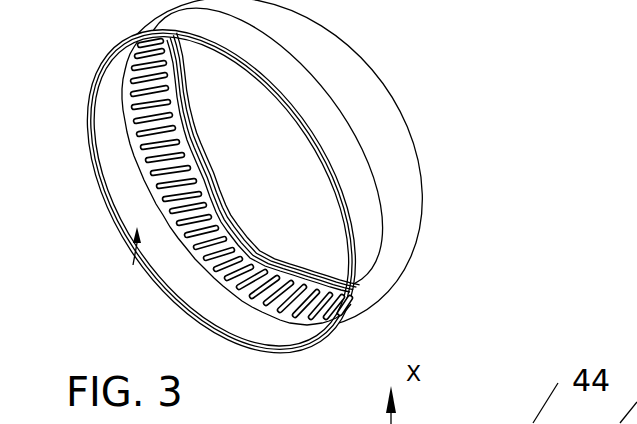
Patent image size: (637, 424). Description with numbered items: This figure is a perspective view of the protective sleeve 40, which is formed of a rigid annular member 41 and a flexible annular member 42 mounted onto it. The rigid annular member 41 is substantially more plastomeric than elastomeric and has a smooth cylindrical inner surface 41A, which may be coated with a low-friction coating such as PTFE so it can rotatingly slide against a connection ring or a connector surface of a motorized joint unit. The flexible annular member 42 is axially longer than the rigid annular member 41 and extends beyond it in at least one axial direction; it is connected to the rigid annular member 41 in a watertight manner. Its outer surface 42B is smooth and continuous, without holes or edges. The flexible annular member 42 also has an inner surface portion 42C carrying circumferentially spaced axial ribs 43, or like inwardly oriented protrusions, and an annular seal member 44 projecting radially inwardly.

The sleeve 40 is at (505, 97).
The rigid annular member 41 is at (137, 265).
The cylindrical inner surface 41A is at (120, 197).
The flexible annular member 42 is at (347, 93).
The outer surface 42B is at (350, 136).
The inner surface portion 42C is at (313, 293).
The axial ribs 43 is at (207, 197).
The annular seal member 44 is at (243, 240).